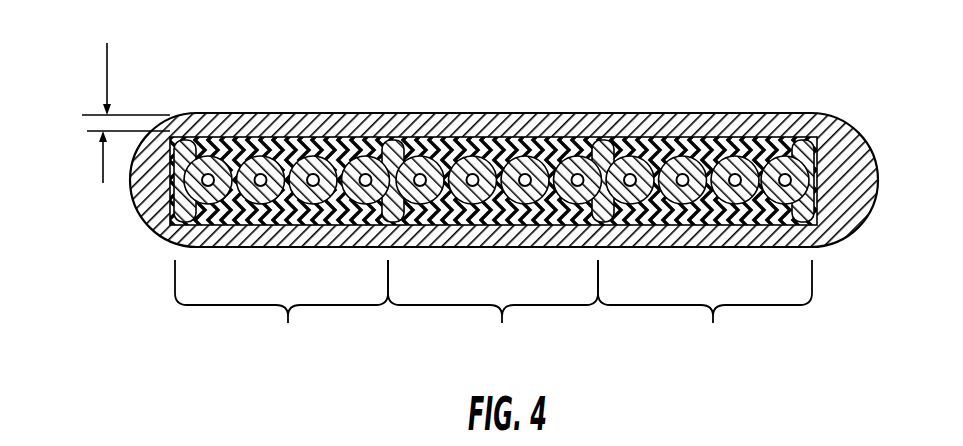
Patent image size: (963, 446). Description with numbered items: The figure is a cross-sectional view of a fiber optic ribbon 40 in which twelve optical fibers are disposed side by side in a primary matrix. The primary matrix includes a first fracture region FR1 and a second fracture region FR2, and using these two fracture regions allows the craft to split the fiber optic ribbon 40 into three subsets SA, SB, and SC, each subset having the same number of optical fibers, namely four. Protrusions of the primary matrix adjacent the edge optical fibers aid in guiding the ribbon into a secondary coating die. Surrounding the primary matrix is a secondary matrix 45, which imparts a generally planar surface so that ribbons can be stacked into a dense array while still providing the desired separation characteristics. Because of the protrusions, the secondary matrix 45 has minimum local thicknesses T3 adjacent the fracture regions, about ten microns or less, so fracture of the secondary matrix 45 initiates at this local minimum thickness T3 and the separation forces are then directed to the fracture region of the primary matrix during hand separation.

The fiber optic ribbon 40 is at (482, 136).
The secondary matrix 45 is at (852, 139).
The minimum local thickness T3 is at (107, 43).
The first fracture region FR1 is at (393, 152).
The second fracture region FR2 is at (603, 152).
The first subset SA is at (281, 309).
The second subset SB is at (493, 309).
The third subset SC is at (705, 309).